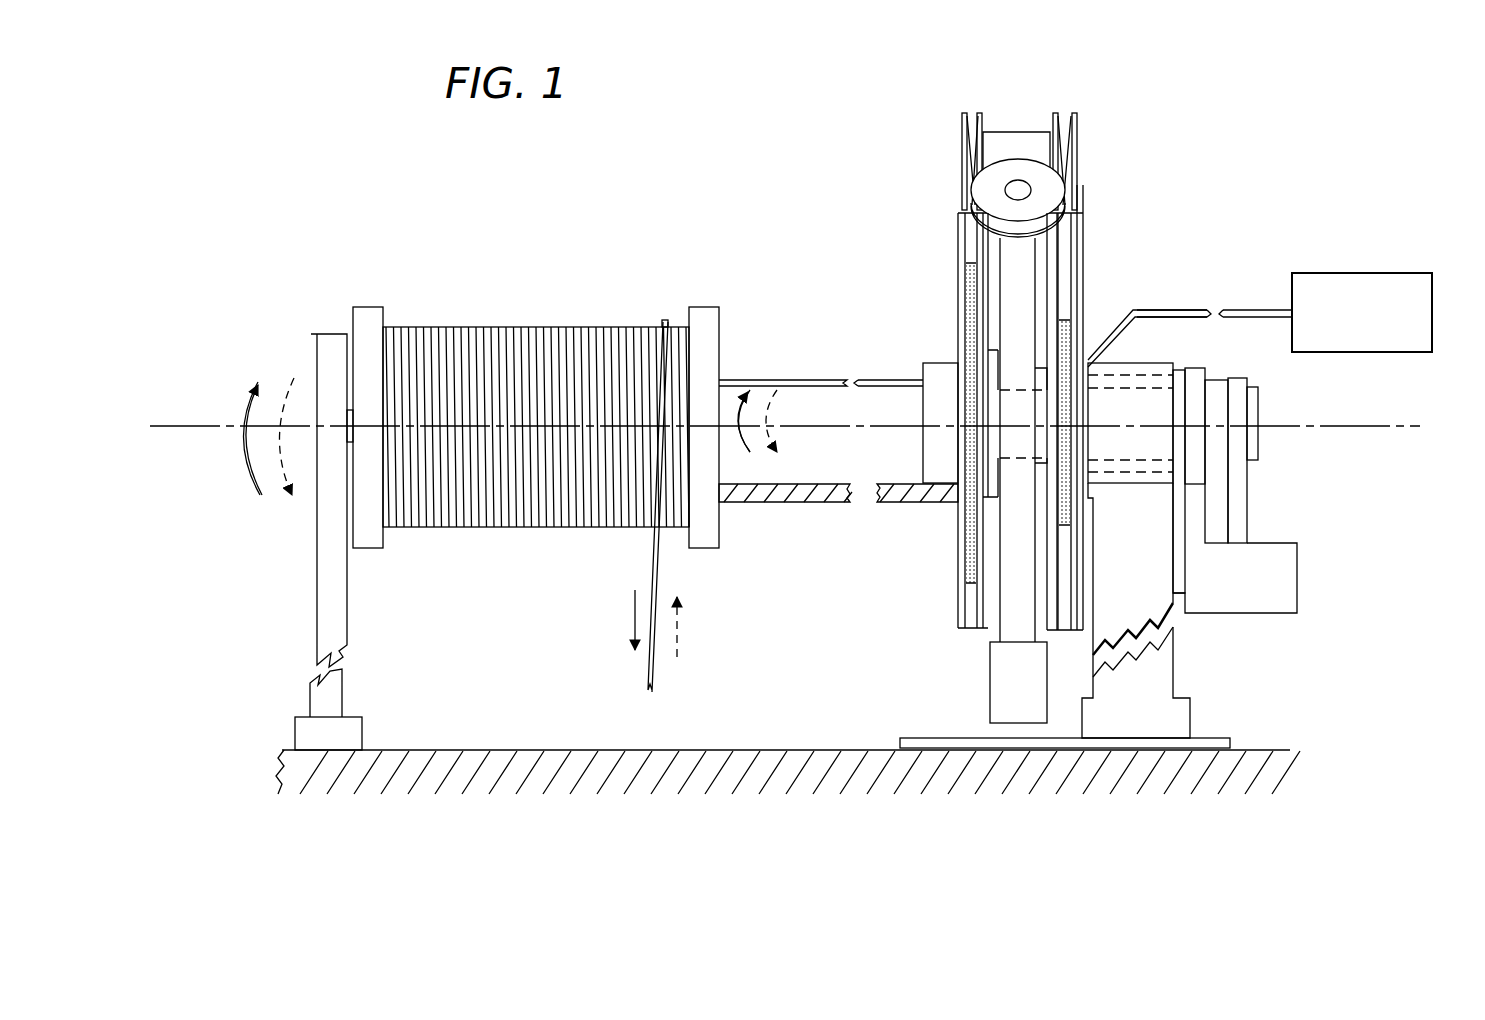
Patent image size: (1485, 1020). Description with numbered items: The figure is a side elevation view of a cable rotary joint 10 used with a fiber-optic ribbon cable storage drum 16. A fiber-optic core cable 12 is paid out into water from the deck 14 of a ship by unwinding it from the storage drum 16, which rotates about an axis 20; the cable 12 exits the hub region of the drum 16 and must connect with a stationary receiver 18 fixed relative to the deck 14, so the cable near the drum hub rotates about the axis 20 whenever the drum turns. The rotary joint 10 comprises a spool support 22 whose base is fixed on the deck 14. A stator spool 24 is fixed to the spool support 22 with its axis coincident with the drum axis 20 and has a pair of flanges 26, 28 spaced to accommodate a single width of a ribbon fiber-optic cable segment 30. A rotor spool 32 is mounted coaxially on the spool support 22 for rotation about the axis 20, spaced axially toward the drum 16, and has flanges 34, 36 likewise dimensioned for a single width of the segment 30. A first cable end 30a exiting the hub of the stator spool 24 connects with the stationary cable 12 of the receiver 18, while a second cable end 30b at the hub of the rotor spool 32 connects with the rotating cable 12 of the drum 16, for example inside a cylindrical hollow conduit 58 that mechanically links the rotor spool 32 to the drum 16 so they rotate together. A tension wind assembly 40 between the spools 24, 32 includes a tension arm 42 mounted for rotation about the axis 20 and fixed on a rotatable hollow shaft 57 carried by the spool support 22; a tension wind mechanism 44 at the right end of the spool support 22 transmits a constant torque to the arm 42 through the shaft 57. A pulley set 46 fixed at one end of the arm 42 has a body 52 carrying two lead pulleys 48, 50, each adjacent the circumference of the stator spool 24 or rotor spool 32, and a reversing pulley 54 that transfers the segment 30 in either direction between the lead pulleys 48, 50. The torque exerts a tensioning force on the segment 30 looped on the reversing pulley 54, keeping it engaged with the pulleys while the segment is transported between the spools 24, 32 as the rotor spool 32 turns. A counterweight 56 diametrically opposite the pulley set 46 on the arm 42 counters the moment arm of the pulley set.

The cable rotary joint 10 is at (933, 108).
The fiber-optic core cable 12 is at (790, 380).
The deck 14 is at (480, 750).
The storage drum 16 is at (378, 310).
The stationary receiver 18 is at (1385, 273).
The axis 20 is at (895, 426).
The spool support 22 is at (1158, 363).
The stator spool 24 is at (1090, 300).
The flange 26 is at (1047, 642).
The flange 28 is at (1060, 630).
The ribbon fiber-optic cable segment 30 is at (963, 115).
The first cable end 30a is at (1213, 312).
The second cable end 30b is at (860, 380).
The rotor spool 32 is at (953, 586).
The flange 34 is at (960, 630).
The flange 36 is at (975, 625).
The tension wind assembly 40 is at (1040, 126).
The tension arm 42 is at (1010, 590).
The tension wind mechanism 44 is at (1304, 582).
The pulley set 46 is at (1084, 150).
The lead pulley 48 is at (1080, 185).
The lead pulley 50 is at (965, 160).
The body 52 is at (1015, 135).
The reversing pulley 54 is at (1050, 205).
The counterweight 56 is at (998, 705).
The rotatable hollow shaft 57 is at (1215, 372).
The cylindrical hollow conduit 58 is at (805, 502).